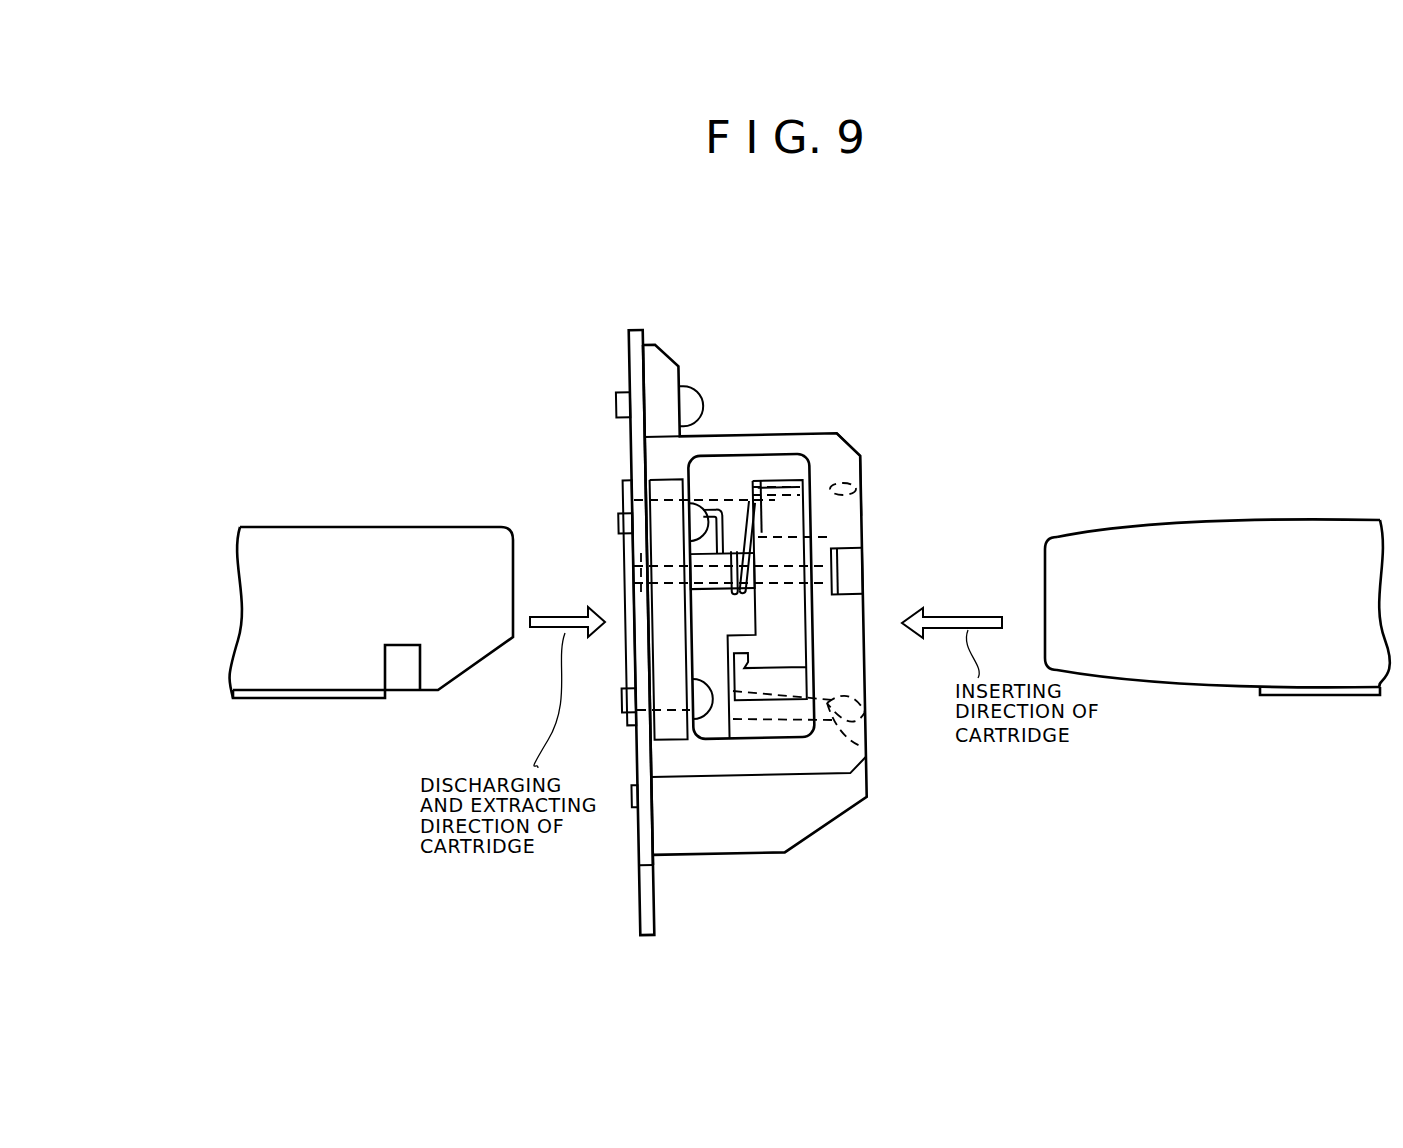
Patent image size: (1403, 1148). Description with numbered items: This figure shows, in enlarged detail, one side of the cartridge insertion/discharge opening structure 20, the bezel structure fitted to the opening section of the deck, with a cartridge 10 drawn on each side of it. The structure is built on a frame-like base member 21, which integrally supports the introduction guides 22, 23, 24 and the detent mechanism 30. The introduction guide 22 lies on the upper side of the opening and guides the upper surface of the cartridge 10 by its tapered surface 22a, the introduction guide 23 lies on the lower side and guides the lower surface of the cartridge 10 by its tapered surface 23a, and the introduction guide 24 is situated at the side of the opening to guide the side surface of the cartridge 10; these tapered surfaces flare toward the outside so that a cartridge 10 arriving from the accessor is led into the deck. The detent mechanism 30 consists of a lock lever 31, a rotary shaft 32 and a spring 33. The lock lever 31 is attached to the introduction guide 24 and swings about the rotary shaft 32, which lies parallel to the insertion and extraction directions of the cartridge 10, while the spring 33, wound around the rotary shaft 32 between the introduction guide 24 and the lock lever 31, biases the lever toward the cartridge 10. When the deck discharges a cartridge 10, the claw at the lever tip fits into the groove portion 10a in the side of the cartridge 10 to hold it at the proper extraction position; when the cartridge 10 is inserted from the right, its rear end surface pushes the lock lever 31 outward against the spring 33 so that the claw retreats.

The cartridge 10 is at (438, 527).
The groove portion 10a is at (400, 679).
The cartridge insertion/discharge opening structure 20 is at (661, 347).
The base member 21 is at (628, 333).
The introduction guide 22 is at (837, 462).
The tapered surface 22a is at (852, 488).
The introduction guide 23 is at (863, 747).
The tapered surface 23a is at (827, 703).
The introduction guide 24 is at (765, 445).
The detent mechanism 30 is at (802, 542).
The lock lever 31 is at (792, 638).
The rotary shaft 32 is at (660, 562).
The spring 33 is at (745, 517).